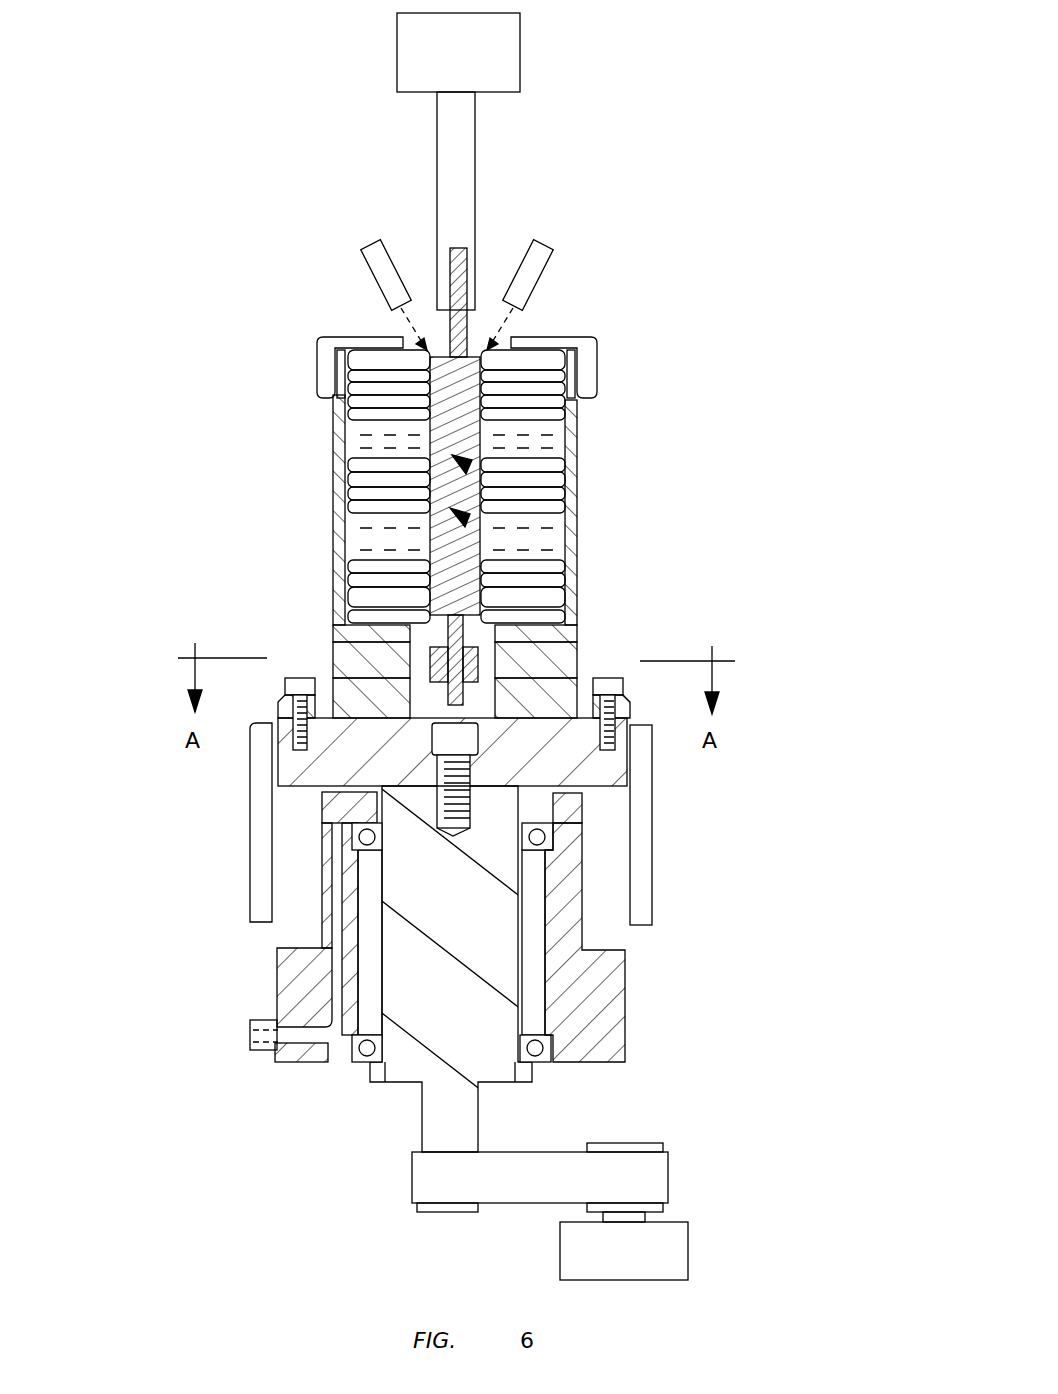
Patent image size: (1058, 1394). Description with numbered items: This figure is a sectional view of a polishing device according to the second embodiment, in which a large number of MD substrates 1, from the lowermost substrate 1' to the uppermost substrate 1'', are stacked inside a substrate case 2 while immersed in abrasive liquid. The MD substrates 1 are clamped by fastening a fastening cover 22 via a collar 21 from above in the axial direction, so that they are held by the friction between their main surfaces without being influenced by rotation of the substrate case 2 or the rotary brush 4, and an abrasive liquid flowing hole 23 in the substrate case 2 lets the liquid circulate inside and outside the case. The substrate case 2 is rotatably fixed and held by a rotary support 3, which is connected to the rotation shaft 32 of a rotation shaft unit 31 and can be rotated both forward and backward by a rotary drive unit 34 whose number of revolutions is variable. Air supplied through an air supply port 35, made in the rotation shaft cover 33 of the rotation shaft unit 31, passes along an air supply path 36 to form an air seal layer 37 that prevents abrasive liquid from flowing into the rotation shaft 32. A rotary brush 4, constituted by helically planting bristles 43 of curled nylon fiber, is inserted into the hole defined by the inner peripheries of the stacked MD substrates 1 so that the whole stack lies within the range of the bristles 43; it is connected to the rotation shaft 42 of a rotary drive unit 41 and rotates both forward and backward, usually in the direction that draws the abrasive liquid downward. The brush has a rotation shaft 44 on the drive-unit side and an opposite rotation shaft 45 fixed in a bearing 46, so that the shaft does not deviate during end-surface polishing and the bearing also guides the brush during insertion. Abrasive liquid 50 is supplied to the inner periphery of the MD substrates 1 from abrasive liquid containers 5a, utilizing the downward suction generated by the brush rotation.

The MD substrate 1 is at (413, 488).
The lowermost substrate 1' is at (489, 584).
The uppermost substrate 1'' is at (510, 372).
The substrate case 2 is at (333, 499).
The rotary support 3 is at (345, 737).
The rotary brush 4 is at (468, 521).
The abrasive liquid container 5a is at (366, 270).
The collar 21 is at (342, 360).
The fastening cover 22 is at (318, 352).
The abrasive liquid flowing hole 23 is at (334, 700).
The rotation shaft unit 31 is at (607, 1037).
The rotation shaft 32 is at (412, 1065).
The rotation shaft cover 33 is at (298, 1053).
The rotary drive unit 34 is at (690, 1250).
The air supply port 35 is at (249, 1037).
The air supply path 36 is at (340, 903).
The air seal layer 37 is at (300, 817).
The rotary drive unit 41 is at (522, 50).
The rotation shaft 42 is at (477, 146).
The bristles 43 is at (466, 466).
The rotation shaft 44 is at (445, 324).
The rotation shaft 45 is at (480, 633).
The bearing 46 is at (478, 668).
The abrasive liquid 50 is at (410, 325).